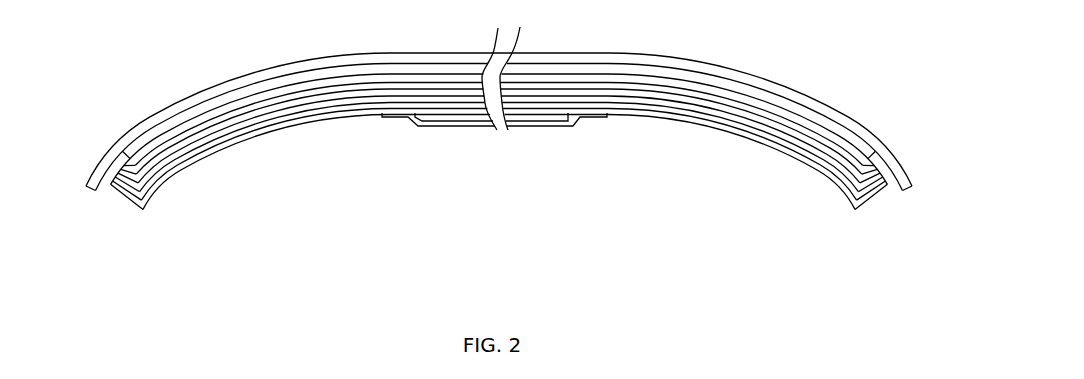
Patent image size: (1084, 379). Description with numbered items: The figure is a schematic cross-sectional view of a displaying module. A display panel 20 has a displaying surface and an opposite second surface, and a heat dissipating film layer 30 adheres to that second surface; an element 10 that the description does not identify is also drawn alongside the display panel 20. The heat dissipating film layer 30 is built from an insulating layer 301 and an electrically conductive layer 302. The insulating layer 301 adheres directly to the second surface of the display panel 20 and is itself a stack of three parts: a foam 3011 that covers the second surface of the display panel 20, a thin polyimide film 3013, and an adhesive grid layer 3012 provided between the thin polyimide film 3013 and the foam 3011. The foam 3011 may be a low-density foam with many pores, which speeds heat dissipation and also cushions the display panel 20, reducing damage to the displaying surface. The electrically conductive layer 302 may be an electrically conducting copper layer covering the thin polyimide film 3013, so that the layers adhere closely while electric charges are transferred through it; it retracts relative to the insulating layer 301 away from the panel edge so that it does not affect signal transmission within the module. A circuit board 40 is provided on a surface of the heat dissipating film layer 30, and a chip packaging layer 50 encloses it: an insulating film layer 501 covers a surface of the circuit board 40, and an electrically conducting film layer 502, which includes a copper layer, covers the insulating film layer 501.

The cover plate 10 is at (885, 155).
The display panel 20 is at (832, 145).
The heat dissipating film layer 30 is at (478, 204).
The insulating layer 301 is at (475, 187).
The foam 3011 is at (119, 173).
The adhesive grid layer 3012 is at (132, 187).
The thin polyimide film 3013 is at (147, 190).
The electrically conductive layer 302 is at (203, 152).
The circuit board 40 is at (550, 112).
The chip packaging layer 50 is at (494, 155).
The insulating film layer 501 is at (435, 125).
The electrically conducting film layer 502 is at (472, 127).